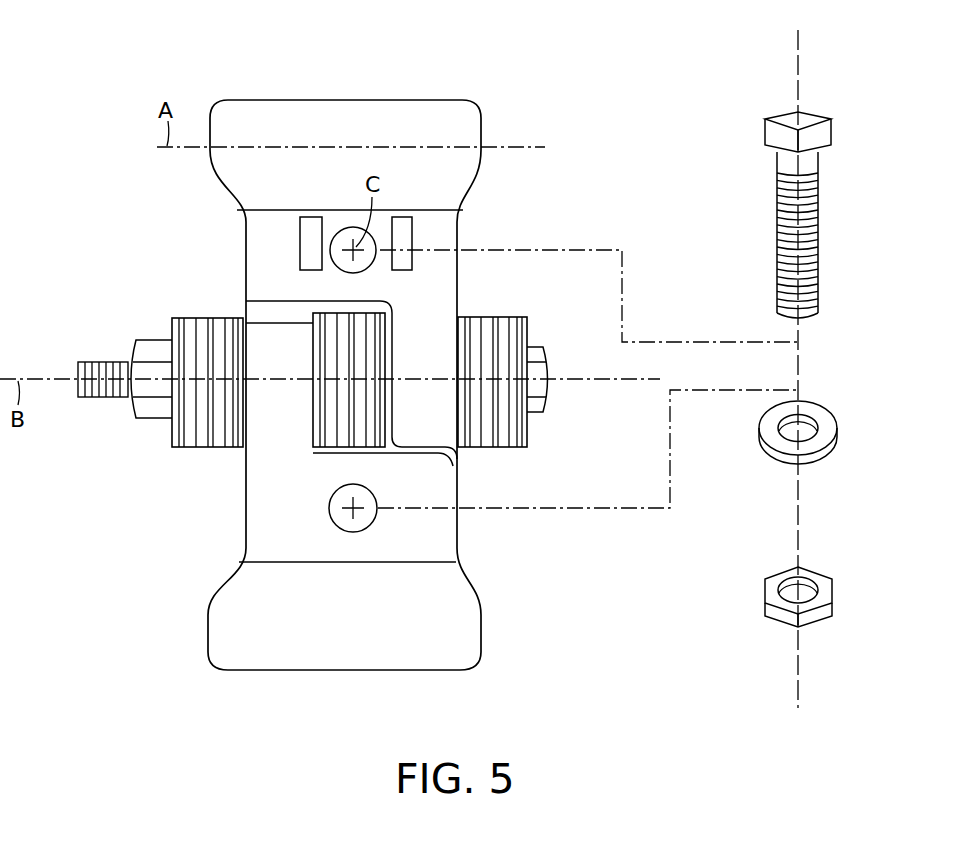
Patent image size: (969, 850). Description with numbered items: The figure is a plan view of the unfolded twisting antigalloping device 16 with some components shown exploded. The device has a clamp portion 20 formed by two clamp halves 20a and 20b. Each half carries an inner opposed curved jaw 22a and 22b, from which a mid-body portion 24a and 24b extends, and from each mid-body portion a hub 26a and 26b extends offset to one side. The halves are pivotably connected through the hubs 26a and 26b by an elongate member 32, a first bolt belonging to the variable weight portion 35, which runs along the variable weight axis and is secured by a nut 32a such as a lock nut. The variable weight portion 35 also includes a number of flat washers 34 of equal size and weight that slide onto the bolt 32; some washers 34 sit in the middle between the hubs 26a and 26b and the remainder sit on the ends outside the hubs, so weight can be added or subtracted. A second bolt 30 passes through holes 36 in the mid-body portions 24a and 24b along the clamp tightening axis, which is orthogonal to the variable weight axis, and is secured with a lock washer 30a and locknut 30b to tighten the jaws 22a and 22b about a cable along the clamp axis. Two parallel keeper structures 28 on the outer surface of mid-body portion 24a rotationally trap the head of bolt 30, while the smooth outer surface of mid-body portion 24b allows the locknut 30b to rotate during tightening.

The antigalloping device 16 is at (72, 52).
The clamp portion 20 is at (270, 100).
The clamp half 20a is at (348, 100).
The clamp half 20b is at (347, 672).
The curved jaw 22a is at (479, 141).
The curved jaw 22b is at (466, 618).
The mid-body portion 24a is at (246, 268).
The mid-body portion 24b is at (446, 487).
The hub portion 26a is at (447, 365).
The hub portion 26b is at (302, 417).
The keeper structures 28 is at (300, 235).
The second bolt 30 is at (820, 198).
The lock washer 30a is at (837, 432).
The locknut 30b is at (832, 600).
The elongate member 32 is at (552, 406).
The nut 32a is at (135, 418).
The flat washers 34 is at (506, 317).
The variable weight portion 35 is at (530, 440).
The holes 36 is at (338, 263).